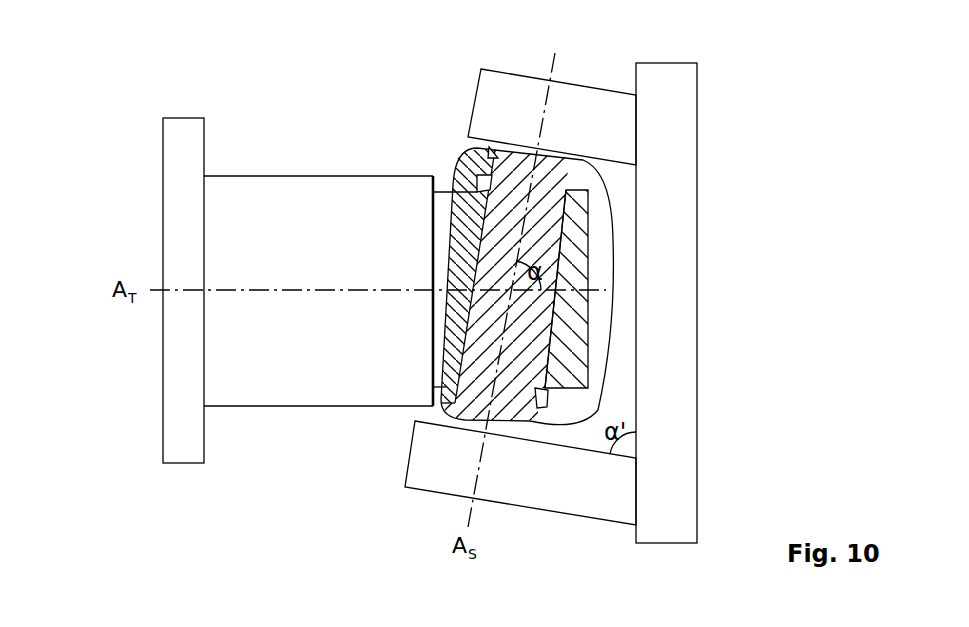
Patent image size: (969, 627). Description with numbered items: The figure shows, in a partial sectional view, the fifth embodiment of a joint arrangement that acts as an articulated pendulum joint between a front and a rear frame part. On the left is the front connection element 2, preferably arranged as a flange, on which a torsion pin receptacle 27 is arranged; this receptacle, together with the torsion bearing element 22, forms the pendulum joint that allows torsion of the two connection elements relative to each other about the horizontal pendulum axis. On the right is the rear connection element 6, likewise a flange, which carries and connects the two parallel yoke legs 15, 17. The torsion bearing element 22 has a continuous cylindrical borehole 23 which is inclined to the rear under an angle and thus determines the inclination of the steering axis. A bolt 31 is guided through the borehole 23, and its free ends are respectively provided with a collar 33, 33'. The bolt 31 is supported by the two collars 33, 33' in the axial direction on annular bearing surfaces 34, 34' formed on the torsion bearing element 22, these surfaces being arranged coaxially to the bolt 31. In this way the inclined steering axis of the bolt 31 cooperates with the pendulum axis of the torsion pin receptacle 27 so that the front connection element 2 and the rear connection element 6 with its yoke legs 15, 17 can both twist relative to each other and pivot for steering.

The front connection element 2 is at (190, 183).
The torsion pin receptacle 27 is at (316, 198).
The rear connection element 6 is at (667, 185).
The yoke leg 17 is at (610, 131).
The yoke leg 15 is at (602, 493).
The collar 33 is at (521, 367).
The collar 33' is at (452, 102).
The bolt 31 is at (545, 228).
The torsion bearing element 22 is at (568, 270).
The borehole 23 is at (550, 336).
The annular bearing surface 34 is at (560, 491).
The annular bearing surface 34' is at (434, 147).